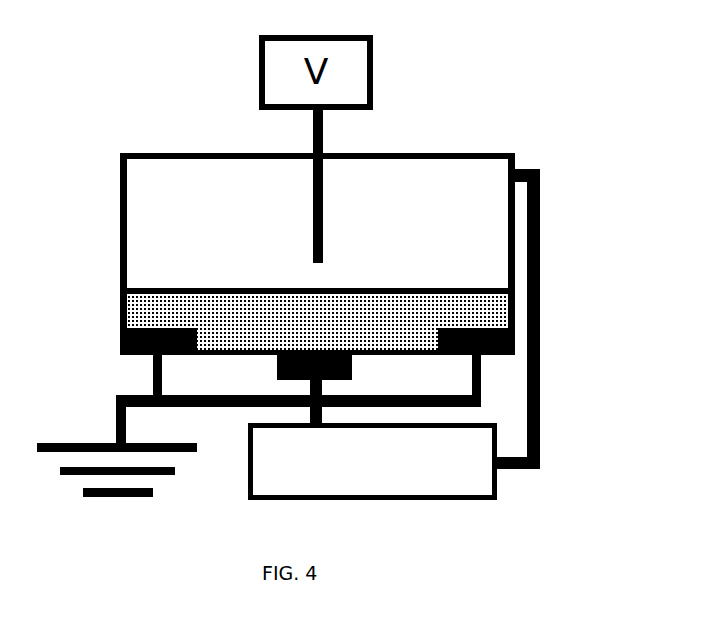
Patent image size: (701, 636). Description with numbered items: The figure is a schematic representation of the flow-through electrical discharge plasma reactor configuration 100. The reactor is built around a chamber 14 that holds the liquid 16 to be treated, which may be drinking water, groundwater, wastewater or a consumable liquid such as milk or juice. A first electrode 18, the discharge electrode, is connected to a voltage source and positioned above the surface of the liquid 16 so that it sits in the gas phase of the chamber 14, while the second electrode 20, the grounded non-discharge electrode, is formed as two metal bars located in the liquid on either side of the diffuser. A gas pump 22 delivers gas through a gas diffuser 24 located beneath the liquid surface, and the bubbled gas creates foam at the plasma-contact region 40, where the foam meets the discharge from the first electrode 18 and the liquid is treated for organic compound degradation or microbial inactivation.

The flow-through electrical discharge plasma reactor configuration 100 is at (92, 50).
The chamber 14 is at (138, 200).
The liquid 16 is at (133, 315).
The first electrode 18 is at (322, 190).
The second electrode 20 is at (120, 347).
The gas pump 22 is at (483, 500).
The gas diffuser 24 is at (275, 368).
The plasma-contact region 40 is at (313, 278).